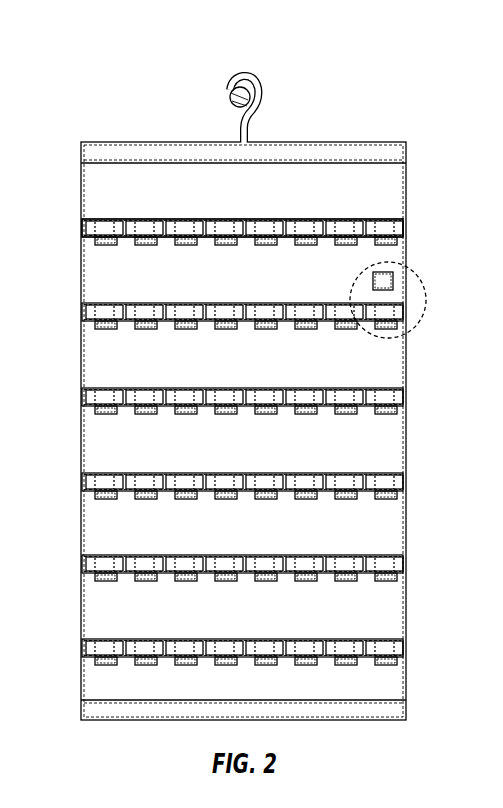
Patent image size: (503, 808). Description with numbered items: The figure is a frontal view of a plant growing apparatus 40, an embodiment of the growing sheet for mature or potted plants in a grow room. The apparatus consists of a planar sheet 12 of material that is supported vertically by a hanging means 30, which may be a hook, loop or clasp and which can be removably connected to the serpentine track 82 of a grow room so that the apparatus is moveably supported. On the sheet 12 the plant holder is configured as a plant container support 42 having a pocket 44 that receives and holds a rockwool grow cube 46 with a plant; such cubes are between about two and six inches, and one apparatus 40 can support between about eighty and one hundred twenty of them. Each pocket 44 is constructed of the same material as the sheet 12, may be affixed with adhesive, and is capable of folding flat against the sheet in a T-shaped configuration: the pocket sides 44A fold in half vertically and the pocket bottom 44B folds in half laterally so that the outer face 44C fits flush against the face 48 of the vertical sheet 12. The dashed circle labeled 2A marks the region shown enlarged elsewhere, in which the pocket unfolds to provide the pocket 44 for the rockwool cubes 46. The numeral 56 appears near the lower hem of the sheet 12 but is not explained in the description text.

The plant growing apparatus 40 is at (131, 89).
The serpentine track 82 is at (237, 88).
The hanging means 30 is at (259, 75).
The sheet 12 is at (81, 183).
The pocket 44 is at (384, 216).
The plant container support 42 is at (408, 228).
The rockwool grow cube 46 is at (387, 282).
The detail view region 2A is at (426, 300).
The face 48 is at (258, 284).
The pocket sides 44A is at (400, 396).
The pocket bottom 44B is at (381, 499).
The outer face 44C is at (383, 644).
The bottom hem 56 is at (290, 704).